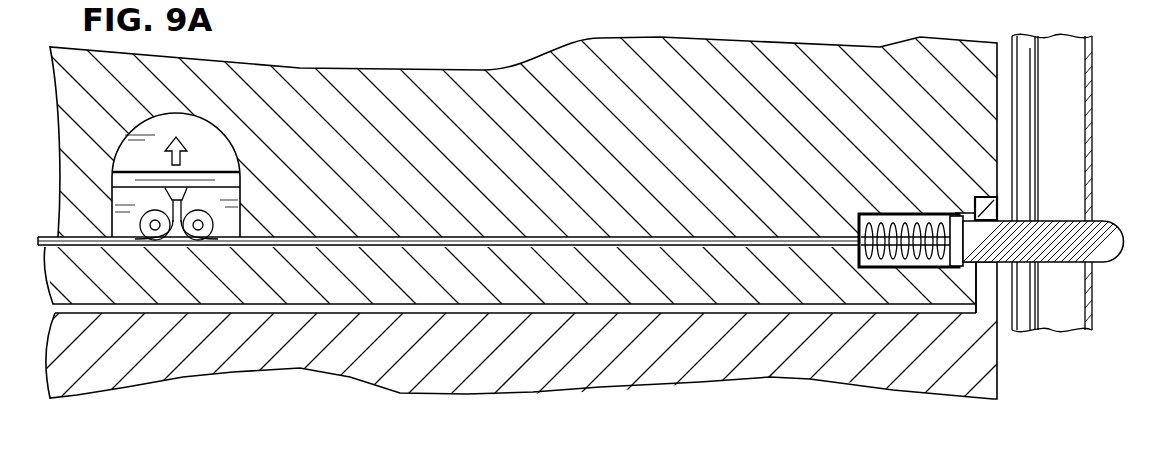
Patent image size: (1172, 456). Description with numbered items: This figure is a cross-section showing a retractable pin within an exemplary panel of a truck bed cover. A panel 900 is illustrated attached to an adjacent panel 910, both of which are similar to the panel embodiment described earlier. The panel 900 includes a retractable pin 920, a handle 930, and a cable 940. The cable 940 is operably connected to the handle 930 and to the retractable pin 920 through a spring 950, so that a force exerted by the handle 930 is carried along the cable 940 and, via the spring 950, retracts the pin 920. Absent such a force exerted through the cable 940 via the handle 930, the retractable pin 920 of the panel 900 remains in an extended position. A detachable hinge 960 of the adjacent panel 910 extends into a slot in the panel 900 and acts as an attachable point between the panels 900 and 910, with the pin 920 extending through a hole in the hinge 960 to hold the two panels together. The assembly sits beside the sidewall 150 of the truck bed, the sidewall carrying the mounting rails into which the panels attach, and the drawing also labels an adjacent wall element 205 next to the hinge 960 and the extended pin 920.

The sidewall 150 is at (586, 118).
The side wall 205 is at (1092, 88).
The panel 900 is at (615, 305).
The adjacent panel 910 is at (750, 378).
The retractable pin 920 is at (1113, 250).
The handle 930 is at (208, 173).
The cable 940 is at (443, 246).
The spring 950 is at (905, 263).
The detachable hinge 960 is at (997, 293).